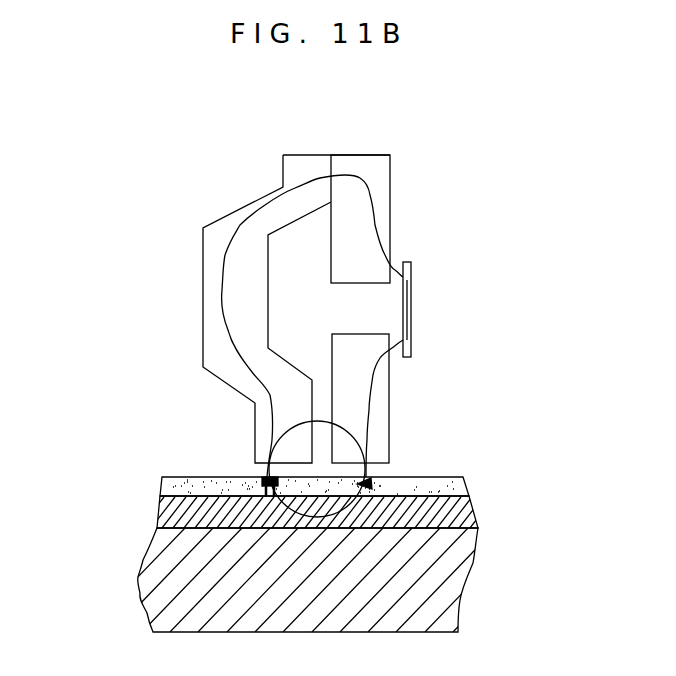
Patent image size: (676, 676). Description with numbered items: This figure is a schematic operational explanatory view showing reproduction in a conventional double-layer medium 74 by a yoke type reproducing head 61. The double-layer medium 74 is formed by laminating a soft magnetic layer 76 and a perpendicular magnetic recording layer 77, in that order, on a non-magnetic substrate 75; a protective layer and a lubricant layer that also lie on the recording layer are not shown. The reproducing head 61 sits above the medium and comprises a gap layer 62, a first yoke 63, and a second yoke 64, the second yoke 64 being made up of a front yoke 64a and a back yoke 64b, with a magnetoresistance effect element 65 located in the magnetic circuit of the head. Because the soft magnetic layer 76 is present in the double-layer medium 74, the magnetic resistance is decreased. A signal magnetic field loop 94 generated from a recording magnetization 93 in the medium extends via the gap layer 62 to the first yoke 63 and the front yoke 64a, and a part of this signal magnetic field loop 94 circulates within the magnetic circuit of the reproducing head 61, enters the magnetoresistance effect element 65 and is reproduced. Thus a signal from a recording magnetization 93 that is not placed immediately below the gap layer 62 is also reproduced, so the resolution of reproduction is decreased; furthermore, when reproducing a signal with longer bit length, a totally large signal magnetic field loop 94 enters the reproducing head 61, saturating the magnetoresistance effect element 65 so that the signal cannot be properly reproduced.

The reproducing head 61 is at (447, 142).
The gap layer 62 is at (322, 403).
The first yoke 63 is at (213, 252).
The second yoke 64 is at (523, 162).
The front yoke 64a is at (382, 408).
The back yoke 64b is at (388, 178).
The magnetoresistance effect element 65 is at (403, 305).
The double-layer medium 74 is at (85, 470).
The non-magnetic substrate 75 is at (173, 588).
The soft magnetic layer 76 is at (158, 518).
The perpendicular magnetic recording layer 77 is at (163, 485).
The recording magnetization 93 is at (257, 477).
The signal magnetic field loop 94 is at (370, 478).